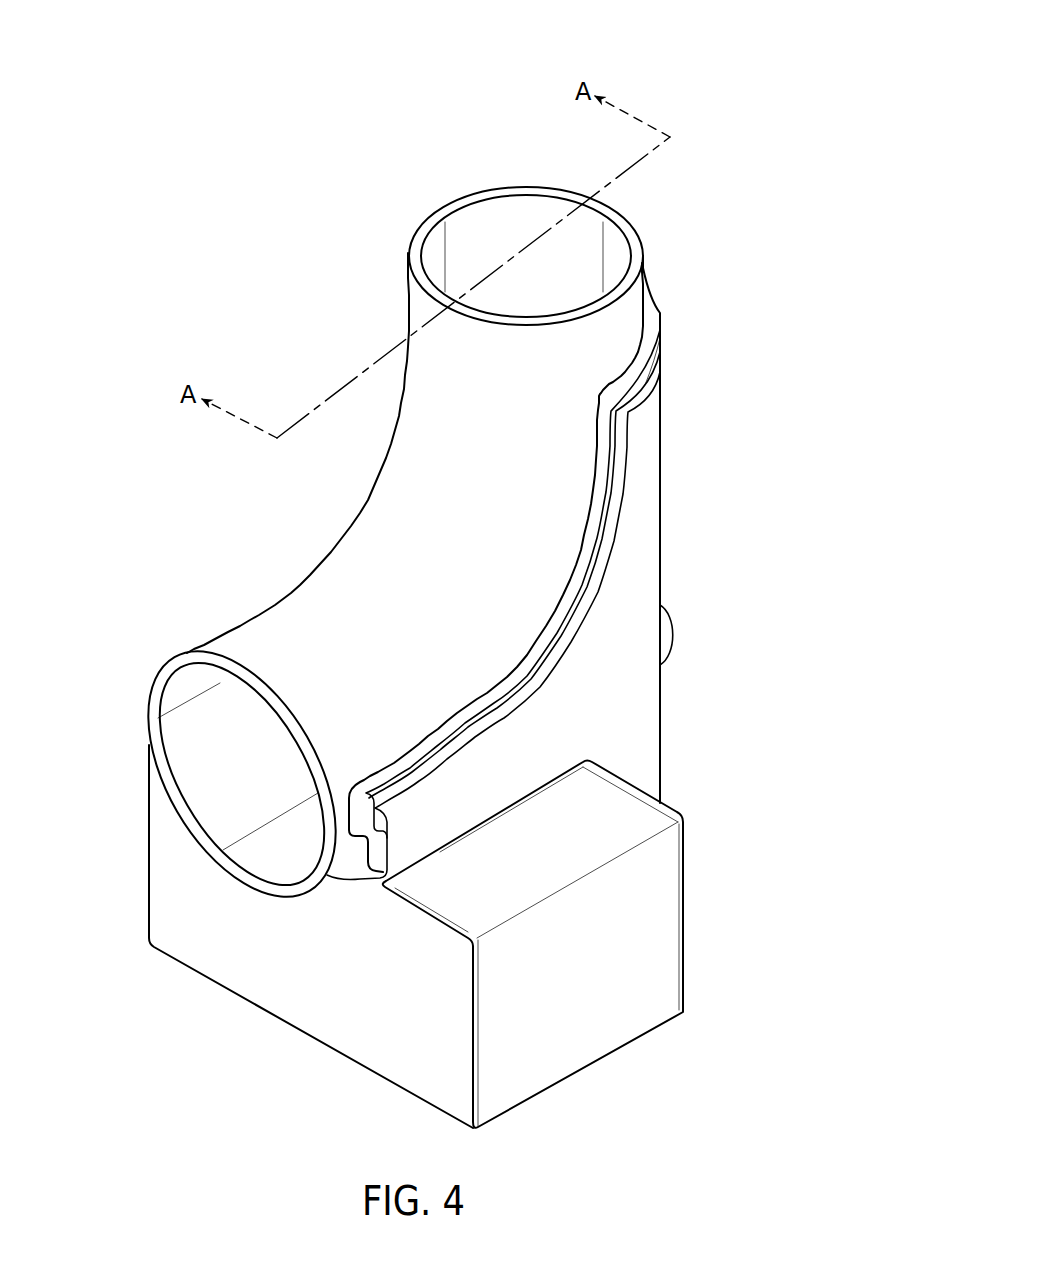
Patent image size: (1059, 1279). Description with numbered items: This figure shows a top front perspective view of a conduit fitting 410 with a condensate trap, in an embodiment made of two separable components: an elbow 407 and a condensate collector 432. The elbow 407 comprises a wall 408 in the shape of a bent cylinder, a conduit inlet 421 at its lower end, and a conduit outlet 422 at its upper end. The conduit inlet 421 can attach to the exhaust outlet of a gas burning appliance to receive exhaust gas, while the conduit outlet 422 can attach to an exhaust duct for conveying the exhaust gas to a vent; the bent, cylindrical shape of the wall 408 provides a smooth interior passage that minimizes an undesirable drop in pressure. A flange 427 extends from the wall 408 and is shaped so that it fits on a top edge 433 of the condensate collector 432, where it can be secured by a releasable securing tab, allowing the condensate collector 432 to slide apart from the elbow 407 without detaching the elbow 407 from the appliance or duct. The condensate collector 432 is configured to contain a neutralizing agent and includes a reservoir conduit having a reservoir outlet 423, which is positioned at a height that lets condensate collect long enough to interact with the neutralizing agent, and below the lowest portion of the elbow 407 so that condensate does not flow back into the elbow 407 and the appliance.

The conduit fitting 410 is at (746, 38).
The elbow 407 is at (205, 603).
The wall 408 is at (360, 513).
The conduit outlet 422 is at (459, 189).
The conduit inlet 421 is at (198, 741).
The flange 427 is at (648, 345).
The top edge 433 is at (637, 437).
The reservoir outlet 423 is at (673, 638).
The condensate collector 432 is at (668, 900).